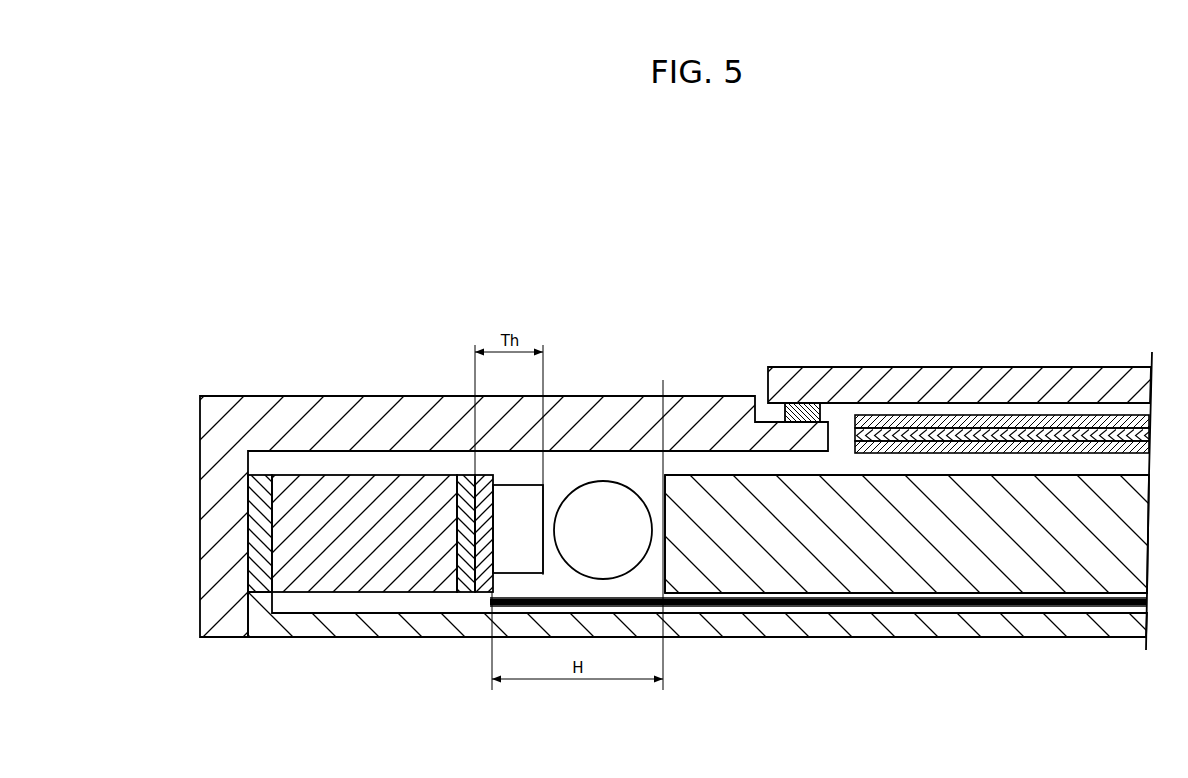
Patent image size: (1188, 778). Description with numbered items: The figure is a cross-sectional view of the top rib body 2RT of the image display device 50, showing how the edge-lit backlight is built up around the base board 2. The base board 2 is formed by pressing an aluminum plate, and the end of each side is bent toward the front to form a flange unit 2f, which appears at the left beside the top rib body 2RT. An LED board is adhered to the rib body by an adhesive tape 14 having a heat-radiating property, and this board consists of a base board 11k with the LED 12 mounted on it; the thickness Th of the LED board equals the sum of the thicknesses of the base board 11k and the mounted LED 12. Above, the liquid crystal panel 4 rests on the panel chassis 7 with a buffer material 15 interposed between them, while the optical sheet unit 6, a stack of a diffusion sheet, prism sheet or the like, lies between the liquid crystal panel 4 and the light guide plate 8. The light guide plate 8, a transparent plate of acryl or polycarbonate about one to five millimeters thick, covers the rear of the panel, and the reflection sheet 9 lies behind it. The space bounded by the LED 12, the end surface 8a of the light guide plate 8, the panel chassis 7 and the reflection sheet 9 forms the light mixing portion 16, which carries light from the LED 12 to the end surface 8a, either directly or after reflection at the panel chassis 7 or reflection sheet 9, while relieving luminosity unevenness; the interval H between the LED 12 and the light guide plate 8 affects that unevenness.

The image display device 50 is at (1036, 245).
The panel chassis 7 is at (343, 418).
The base board 2 is at (716, 626).
The top rib body 2RT is at (372, 576).
The flange unit 2f is at (258, 586).
The adhesive tape 14 is at (466, 588).
The base board of the LED board 11k is at (483, 598).
The LED 12 is at (517, 493).
The light mixing portion 16 is at (603, 492).
The light guide plate 8 is at (1029, 595).
The end surface of the light guide plate 8a is at (663, 477).
The reflection sheet 9 is at (815, 611).
The liquid crystal panel 4 is at (955, 383).
The buffer material 15 is at (806, 402).
The optical sheet unit 6 is at (1078, 432).